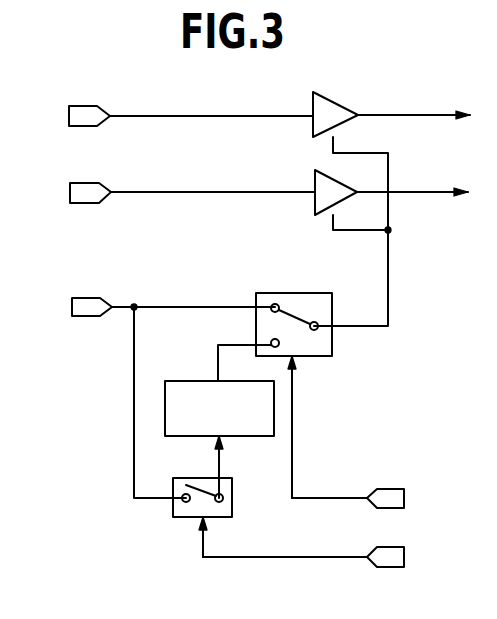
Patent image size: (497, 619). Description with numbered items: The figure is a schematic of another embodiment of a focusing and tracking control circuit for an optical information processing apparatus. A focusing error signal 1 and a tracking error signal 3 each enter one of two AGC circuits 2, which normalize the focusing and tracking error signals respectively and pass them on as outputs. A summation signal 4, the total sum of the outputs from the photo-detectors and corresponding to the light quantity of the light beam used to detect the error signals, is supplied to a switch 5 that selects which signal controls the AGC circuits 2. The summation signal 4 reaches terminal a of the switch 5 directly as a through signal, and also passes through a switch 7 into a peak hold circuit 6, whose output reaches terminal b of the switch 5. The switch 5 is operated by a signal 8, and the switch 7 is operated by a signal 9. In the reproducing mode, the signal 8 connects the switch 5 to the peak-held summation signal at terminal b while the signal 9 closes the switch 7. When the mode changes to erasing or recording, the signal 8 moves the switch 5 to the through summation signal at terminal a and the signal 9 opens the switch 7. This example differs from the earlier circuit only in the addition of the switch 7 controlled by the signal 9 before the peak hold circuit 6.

The focusing error signal 1 is at (98, 105).
The AGC circuits 2 is at (345, 102).
The tracking error signal 3 is at (100, 182).
The summation signal 4 is at (105, 297).
The switch 5 is at (297, 291).
The peak hold circuit 6 is at (185, 380).
The switch 7 is at (232, 504).
The signal 8 is at (395, 488).
The signal 9 is at (395, 546).